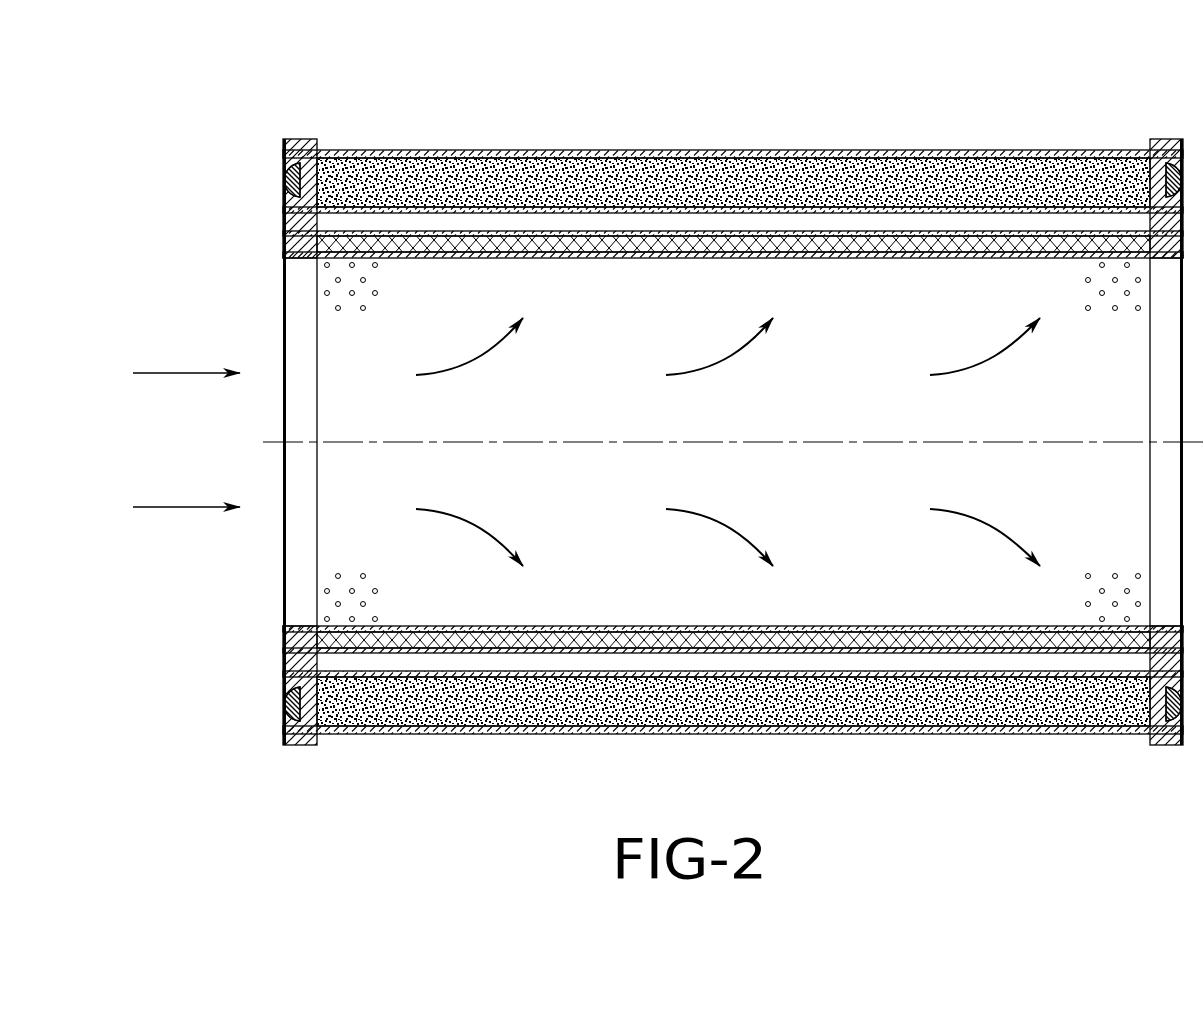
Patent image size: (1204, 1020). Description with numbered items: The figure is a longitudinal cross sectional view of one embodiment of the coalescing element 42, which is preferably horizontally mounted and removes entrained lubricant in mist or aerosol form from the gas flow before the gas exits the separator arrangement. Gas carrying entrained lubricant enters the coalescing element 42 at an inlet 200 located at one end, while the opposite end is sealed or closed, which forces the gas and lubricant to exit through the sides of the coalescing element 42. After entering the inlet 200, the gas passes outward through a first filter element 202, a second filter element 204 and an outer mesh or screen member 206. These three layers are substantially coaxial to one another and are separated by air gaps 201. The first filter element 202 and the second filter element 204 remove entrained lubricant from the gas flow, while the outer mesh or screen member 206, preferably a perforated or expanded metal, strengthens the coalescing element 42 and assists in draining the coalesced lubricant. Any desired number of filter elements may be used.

The coalescing element 42 is at (668, 443).
The inlet 200 is at (263, 573).
The air gaps 201 is at (740, 157).
The first filter element 202 is at (623, 247).
The second filter element 204 is at (975, 705).
The outer mesh or screen member 206 is at (465, 730).